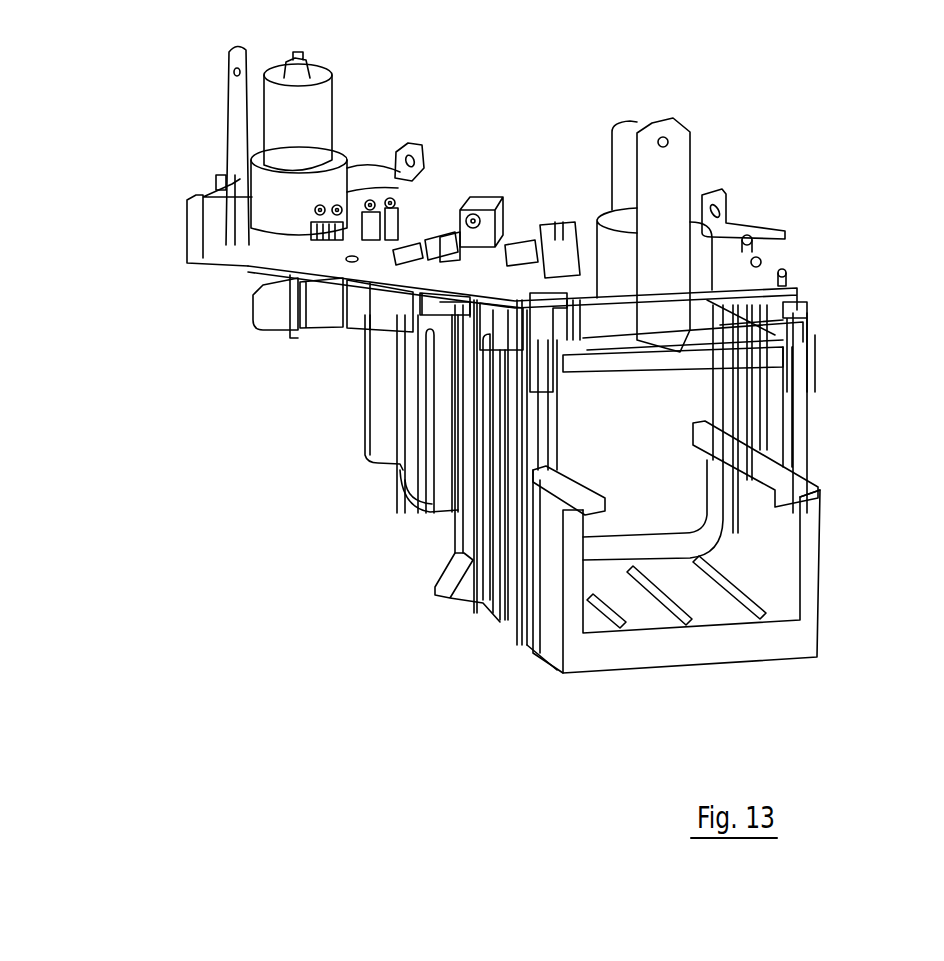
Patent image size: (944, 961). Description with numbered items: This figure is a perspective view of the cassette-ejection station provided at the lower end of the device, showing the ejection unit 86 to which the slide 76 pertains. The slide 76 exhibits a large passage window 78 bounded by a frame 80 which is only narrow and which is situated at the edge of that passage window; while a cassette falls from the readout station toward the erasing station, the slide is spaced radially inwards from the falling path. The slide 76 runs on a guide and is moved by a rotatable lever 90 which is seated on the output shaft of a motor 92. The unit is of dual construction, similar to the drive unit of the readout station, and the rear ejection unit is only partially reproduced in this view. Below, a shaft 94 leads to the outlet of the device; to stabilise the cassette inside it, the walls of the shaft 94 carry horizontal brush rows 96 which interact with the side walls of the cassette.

The slide 76 is at (375, 398).
The passage window 78 is at (404, 477).
The frame 80 is at (400, 472).
The ejection unit 86 is at (150, 613).
The rotatable lever 90 is at (657, 333).
The motor 92 is at (620, 168).
The shaft 94 is at (527, 589).
The horizontal brush rows 96 is at (582, 492).